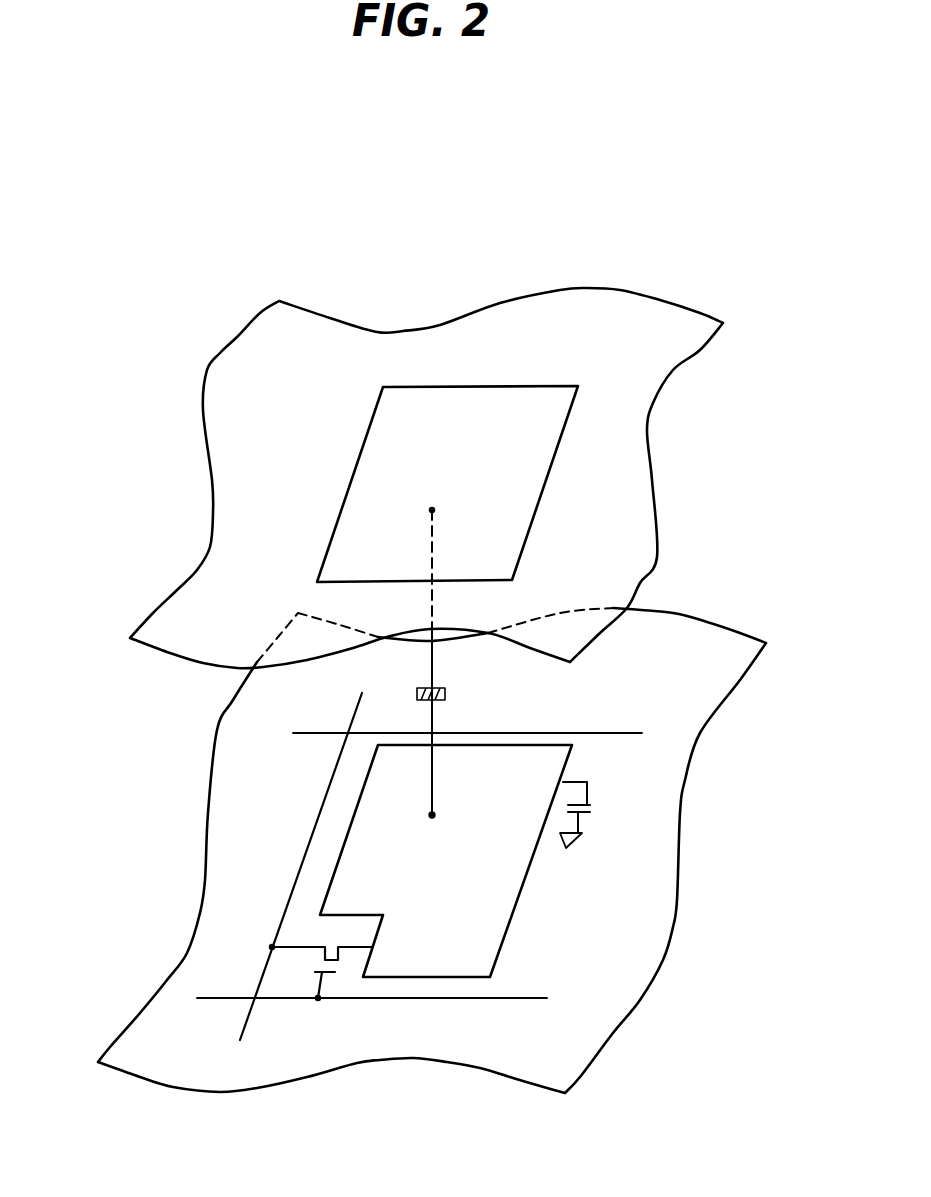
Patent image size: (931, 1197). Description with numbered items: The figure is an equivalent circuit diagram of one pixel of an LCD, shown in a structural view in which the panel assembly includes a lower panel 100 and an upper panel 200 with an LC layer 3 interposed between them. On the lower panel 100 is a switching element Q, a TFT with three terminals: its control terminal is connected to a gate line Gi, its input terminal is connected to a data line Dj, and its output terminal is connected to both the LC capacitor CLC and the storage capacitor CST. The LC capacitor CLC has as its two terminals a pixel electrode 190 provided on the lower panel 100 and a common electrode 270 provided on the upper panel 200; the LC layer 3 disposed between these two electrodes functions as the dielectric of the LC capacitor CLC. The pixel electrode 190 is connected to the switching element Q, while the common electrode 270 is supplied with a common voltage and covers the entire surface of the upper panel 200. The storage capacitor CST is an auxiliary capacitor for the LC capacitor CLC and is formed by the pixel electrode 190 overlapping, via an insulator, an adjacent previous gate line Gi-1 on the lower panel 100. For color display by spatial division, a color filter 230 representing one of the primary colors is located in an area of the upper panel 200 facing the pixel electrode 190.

The LC layer 3 is at (112, 749).
The lower panel 100 is at (700, 826).
The pixel electrode 190 is at (513, 913).
The upper panel 200 is at (450, 478).
The color filter 230 is at (542, 497).
The common electrode 270 is at (648, 450).
The switching element Q is at (321, 972).
The data line Dj is at (301, 866).
The gate line Gi is at (372, 980).
The previous gate line Gi-1 is at (452, 753).
The LC capacitor CLC is at (461, 662).
The storage capacitor CST is at (601, 815).